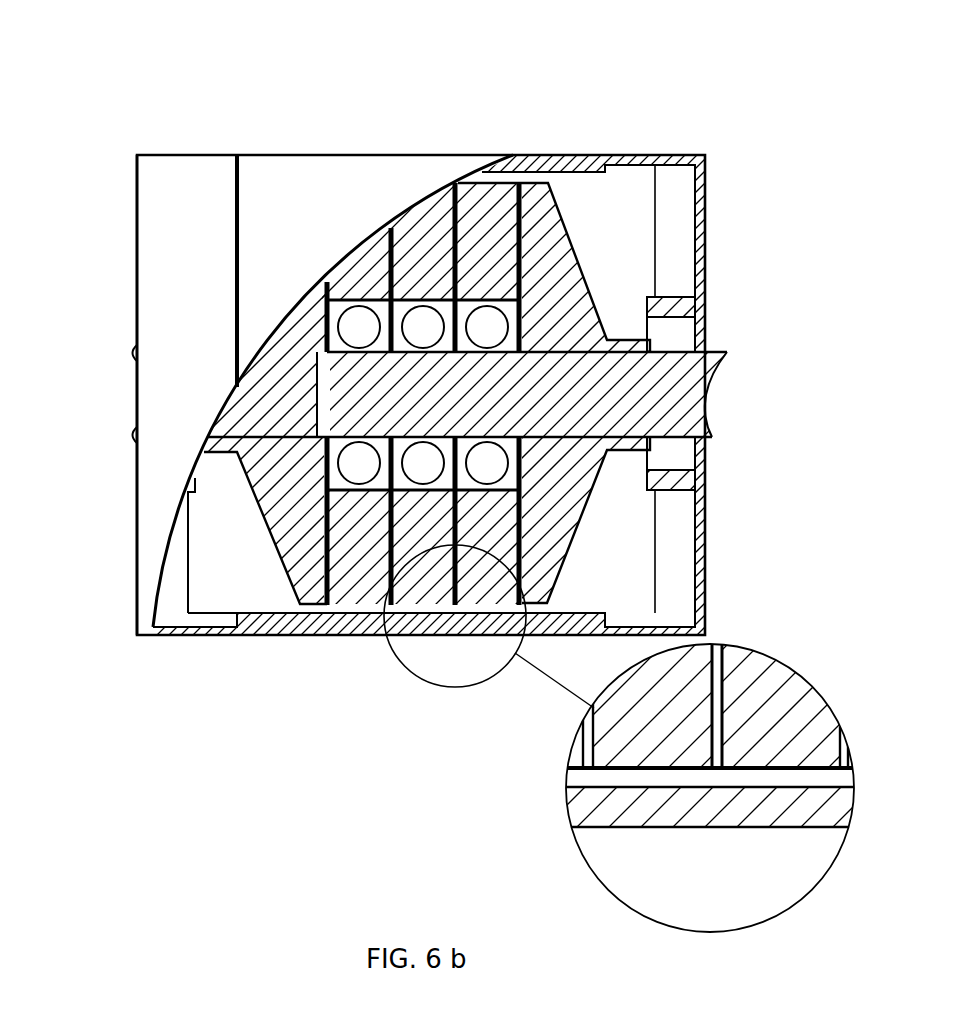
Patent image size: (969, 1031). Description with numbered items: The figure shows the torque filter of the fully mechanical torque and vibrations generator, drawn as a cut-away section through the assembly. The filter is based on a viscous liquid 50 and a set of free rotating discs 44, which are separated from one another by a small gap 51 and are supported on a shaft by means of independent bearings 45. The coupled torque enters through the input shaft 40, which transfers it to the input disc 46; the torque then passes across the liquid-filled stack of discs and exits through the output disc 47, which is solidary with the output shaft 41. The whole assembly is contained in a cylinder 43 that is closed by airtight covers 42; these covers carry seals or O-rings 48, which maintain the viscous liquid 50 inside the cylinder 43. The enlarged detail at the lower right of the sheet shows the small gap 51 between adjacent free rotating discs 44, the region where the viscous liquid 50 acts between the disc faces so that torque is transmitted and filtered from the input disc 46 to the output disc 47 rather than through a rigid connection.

The input shaft 40 is at (115, 408).
The output shaft 41 is at (687, 388).
The airtight cover 42 is at (182, 180).
The cylinder 43 is at (352, 172).
The free rotating discs 44 is at (487, 210).
The independent bearings 45 is at (378, 483).
The input disc 46 is at (292, 555).
The output disc 47 is at (565, 297).
The seals or O-rings 48 is at (677, 332).
The viscous liquid 50 is at (625, 577).
The small gap 51 is at (695, 748).